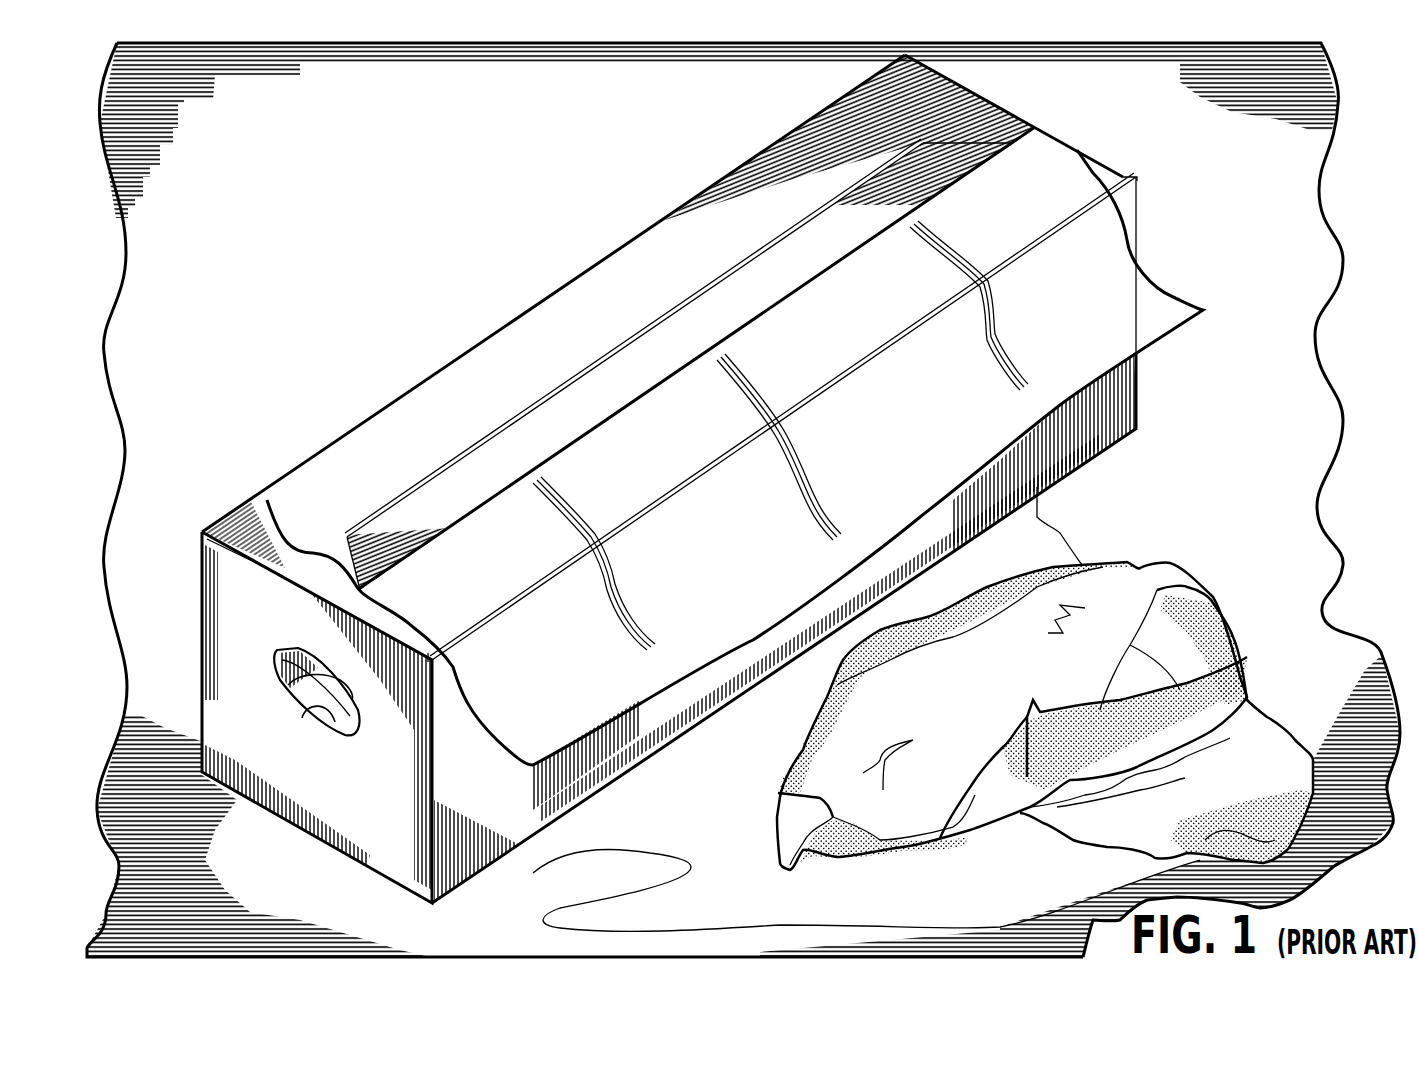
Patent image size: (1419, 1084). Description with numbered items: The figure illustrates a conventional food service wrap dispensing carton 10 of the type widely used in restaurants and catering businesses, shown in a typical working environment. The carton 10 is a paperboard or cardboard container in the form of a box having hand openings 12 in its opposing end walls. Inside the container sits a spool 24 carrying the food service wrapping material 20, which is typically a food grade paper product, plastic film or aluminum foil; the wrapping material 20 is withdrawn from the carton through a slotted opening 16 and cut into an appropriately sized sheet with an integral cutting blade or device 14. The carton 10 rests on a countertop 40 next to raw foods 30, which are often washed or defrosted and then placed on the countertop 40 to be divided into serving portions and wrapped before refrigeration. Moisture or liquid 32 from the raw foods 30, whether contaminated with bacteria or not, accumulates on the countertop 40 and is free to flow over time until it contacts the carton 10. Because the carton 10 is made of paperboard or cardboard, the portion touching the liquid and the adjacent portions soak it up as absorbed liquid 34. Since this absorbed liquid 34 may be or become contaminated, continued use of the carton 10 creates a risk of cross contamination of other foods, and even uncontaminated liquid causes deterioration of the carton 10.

The food service wrap dispensing carton 10 is at (1012, 115).
The hand opening 12 is at (344, 737).
The cutting blade 14 is at (1133, 177).
The slotted opening 16 is at (267, 500).
The food service wrapping material 20 is at (1172, 306).
The spool 24 is at (298, 688).
The raw foods 30 is at (1208, 595).
The liquid 32 is at (1057, 545).
The absorbed liquid 34 is at (585, 787).
The countertop 40 is at (1265, 395).